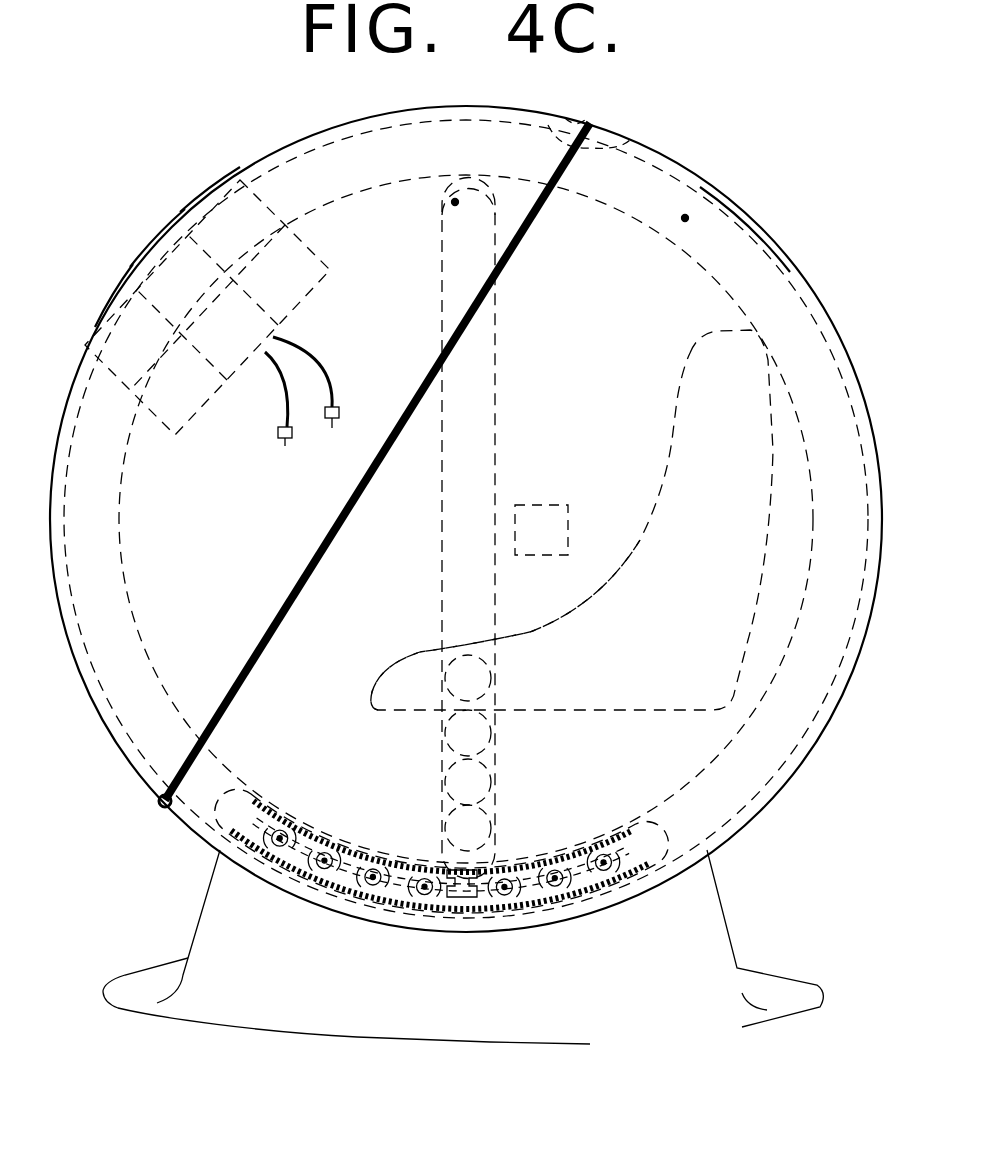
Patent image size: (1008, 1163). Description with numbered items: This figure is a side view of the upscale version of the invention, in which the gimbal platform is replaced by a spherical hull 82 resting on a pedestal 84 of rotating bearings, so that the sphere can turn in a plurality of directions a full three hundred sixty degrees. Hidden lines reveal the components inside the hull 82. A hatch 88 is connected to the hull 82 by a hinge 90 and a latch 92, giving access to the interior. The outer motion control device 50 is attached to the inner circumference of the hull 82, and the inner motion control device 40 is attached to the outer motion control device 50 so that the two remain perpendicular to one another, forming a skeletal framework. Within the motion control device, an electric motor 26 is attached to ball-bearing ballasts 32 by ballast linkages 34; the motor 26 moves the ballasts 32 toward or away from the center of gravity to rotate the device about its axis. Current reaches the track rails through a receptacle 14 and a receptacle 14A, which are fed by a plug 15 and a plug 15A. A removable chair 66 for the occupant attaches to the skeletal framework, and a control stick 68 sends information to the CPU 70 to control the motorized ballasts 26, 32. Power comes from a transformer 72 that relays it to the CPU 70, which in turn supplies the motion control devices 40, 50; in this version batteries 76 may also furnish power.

The hatch 88 is at (320, 130).
The hull 82 is at (745, 207).
The batteries 76 is at (208, 192).
The transformer 72 is at (155, 242).
The CPU 70 is at (118, 294).
The outer motion control device 50 is at (780, 265).
The hinge 90 is at (162, 812).
The latch 92 is at (555, 115).
The inner motion control device 40 is at (440, 325).
The receptacle 14A is at (455, 204).
The receptacle 14 is at (685, 220).
The removable chair 66 is at (372, 690).
The control stick 68 is at (528, 500).
The plug 15 is at (280, 397).
The plug 15A is at (325, 360).
The ballast linkage 34 is at (357, 873).
The ball-bearing ballast 32 is at (503, 900).
The electric motor 26 is at (447, 895).
The pedestal 84 is at (735, 930).